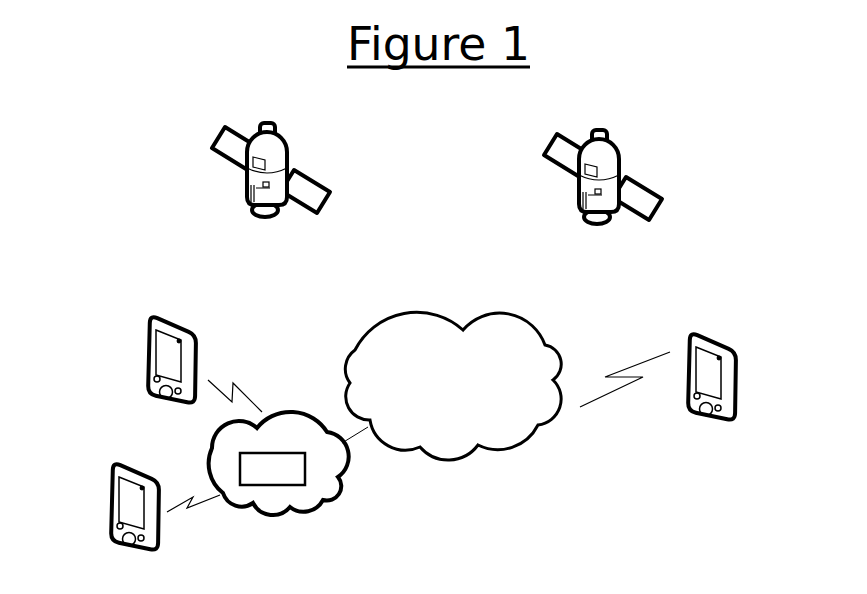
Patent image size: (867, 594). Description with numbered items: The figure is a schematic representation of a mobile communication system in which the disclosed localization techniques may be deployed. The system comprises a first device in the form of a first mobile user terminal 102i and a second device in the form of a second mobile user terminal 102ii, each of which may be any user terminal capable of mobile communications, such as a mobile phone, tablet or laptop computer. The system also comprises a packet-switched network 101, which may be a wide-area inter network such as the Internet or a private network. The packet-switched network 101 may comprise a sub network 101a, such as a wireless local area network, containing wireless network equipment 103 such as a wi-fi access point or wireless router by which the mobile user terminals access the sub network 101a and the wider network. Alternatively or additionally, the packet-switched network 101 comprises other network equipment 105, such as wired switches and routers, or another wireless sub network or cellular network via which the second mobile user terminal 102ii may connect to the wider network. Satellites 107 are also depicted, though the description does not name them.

The packet-switched network 101 is at (473, 320).
The sub network 101a is at (332, 495).
The first mobile user terminal 102i is at (148, 365).
The second mobile user terminal 102ii is at (112, 518).
The wireless network equipment 103 is at (293, 482).
The other network equipment 105 is at (502, 428).
The satellite 107 is at (247, 198).